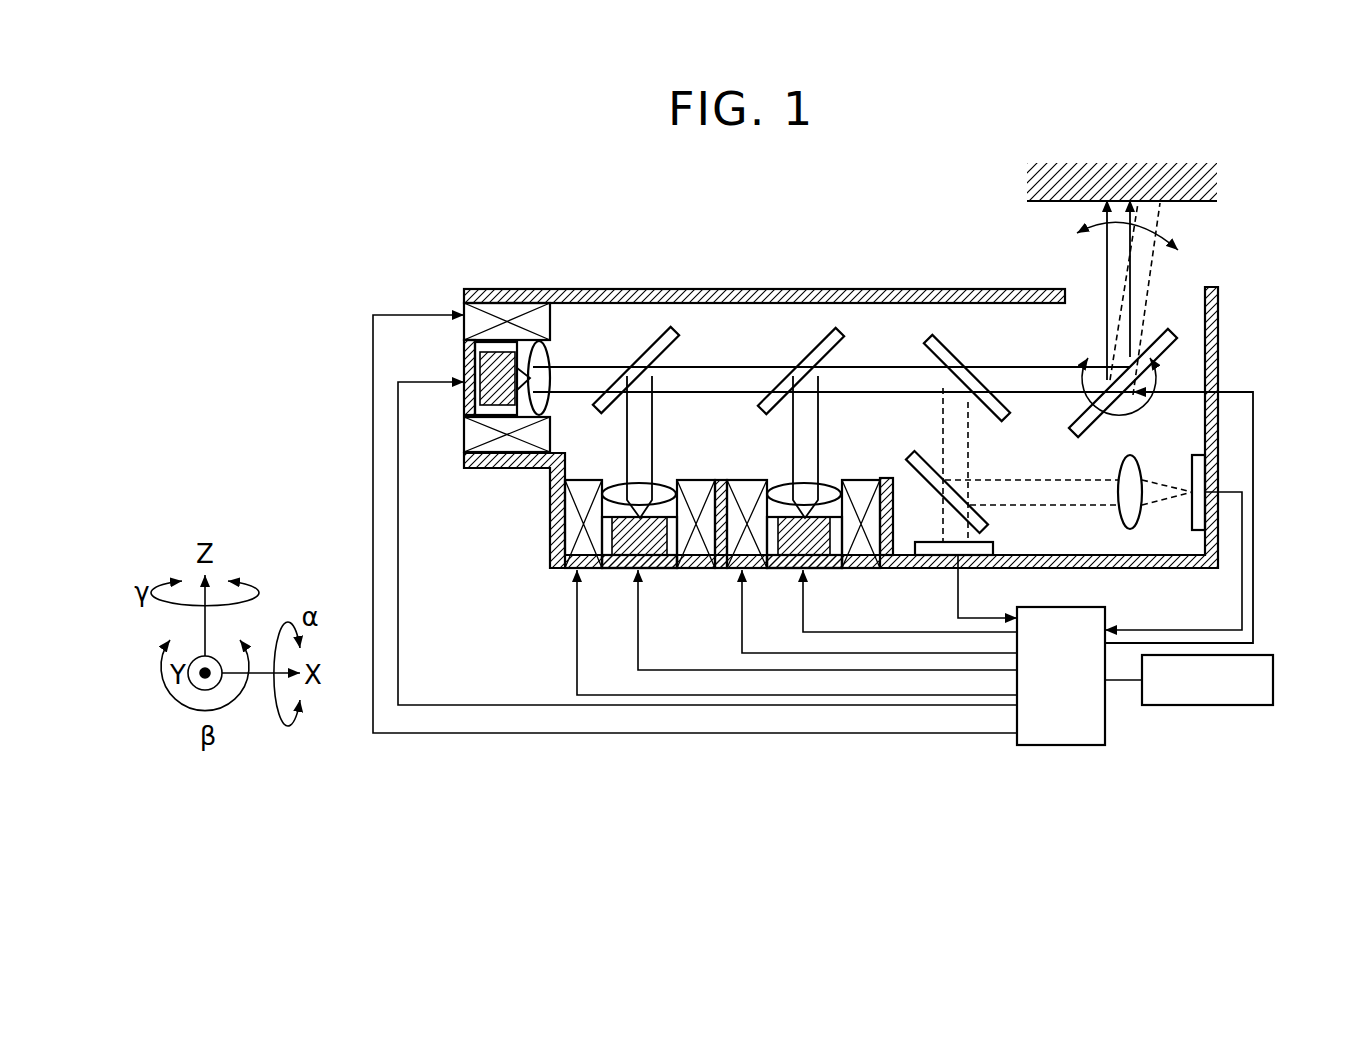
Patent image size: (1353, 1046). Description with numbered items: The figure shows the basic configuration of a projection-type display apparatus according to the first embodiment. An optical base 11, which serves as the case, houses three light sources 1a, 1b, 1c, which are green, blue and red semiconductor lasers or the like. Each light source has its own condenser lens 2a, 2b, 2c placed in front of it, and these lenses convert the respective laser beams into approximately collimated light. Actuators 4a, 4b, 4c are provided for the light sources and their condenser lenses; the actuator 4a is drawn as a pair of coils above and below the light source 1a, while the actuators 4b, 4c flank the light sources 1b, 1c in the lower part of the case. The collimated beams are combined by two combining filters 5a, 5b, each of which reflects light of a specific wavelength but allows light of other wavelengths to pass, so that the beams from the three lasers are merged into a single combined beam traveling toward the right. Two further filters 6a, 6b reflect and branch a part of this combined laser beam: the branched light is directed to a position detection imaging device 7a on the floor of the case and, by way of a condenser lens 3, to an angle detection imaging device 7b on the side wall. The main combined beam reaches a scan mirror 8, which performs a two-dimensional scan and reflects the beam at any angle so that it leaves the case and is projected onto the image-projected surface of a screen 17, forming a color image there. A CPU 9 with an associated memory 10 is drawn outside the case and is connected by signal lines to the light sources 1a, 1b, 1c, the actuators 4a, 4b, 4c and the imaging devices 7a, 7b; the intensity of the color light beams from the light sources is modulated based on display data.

The light source 1a is at (464, 362).
The light source 1b is at (662, 570).
The light source 1c is at (817, 570).
The condenser lens 2a is at (550, 358).
The condenser lens 2b is at (664, 483).
The condenser lens 2c is at (830, 483).
The condenser lens 3 is at (1118, 512).
The actuator 4a is at (550, 318).
The actuator 4b is at (581, 480).
The actuator 4c is at (753, 480).
The combining filter 5a is at (678, 343).
The combining filter 5b is at (842, 343).
The reflection/branching filter 6a is at (946, 346).
The reflection/branching filter 6b is at (922, 457).
The position detection imaging device 7a is at (987, 548).
The angle detection imaging device 7b is at (1200, 455).
The scan mirror 8 is at (1075, 422).
The CPU 9 is at (1057, 746).
The memory 10 is at (1193, 706).
The optical base 11 is at (764, 285).
The screen 17 is at (1217, 182).